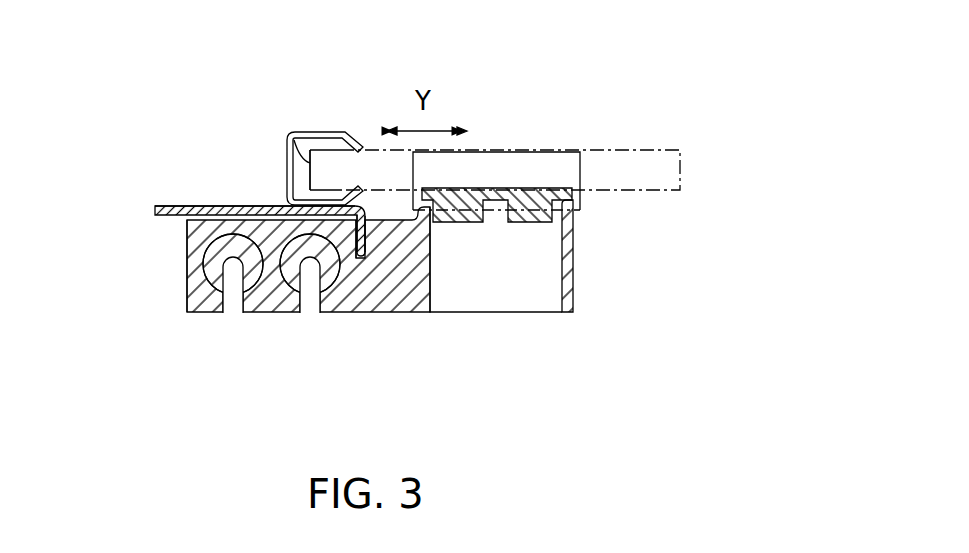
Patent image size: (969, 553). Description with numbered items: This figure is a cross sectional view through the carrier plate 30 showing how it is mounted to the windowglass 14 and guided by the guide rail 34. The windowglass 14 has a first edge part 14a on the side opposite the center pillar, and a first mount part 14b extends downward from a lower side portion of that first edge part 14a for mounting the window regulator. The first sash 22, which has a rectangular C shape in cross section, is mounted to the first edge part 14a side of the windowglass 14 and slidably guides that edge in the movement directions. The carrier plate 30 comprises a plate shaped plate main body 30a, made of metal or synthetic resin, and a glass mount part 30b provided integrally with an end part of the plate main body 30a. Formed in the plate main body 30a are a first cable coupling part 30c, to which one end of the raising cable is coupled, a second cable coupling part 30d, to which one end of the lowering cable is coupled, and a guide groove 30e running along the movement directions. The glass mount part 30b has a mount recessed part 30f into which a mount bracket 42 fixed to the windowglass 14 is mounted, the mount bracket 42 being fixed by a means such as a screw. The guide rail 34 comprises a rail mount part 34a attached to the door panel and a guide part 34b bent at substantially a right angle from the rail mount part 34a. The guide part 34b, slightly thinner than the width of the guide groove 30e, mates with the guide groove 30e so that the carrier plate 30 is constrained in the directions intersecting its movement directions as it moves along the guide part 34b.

The windowglass 14 is at (502, 138).
The first edge part 14a is at (302, 130).
The first mount part 14b is at (585, 150).
The first sash 22 is at (323, 130).
The carrier plate 30 is at (163, 253).
The plate main body 30a is at (182, 310).
The glass mount part 30b is at (582, 275).
The first cable coupling part 30c is at (318, 311).
The second cable coupling part 30d is at (232, 297).
The guide groove 30e is at (348, 265).
The mount recessed part 30f is at (560, 253).
The guide rail 34 is at (213, 197).
The rail mount part 34a is at (255, 206).
The guide part 34b is at (360, 240).
The mount bracket 42 is at (470, 222).